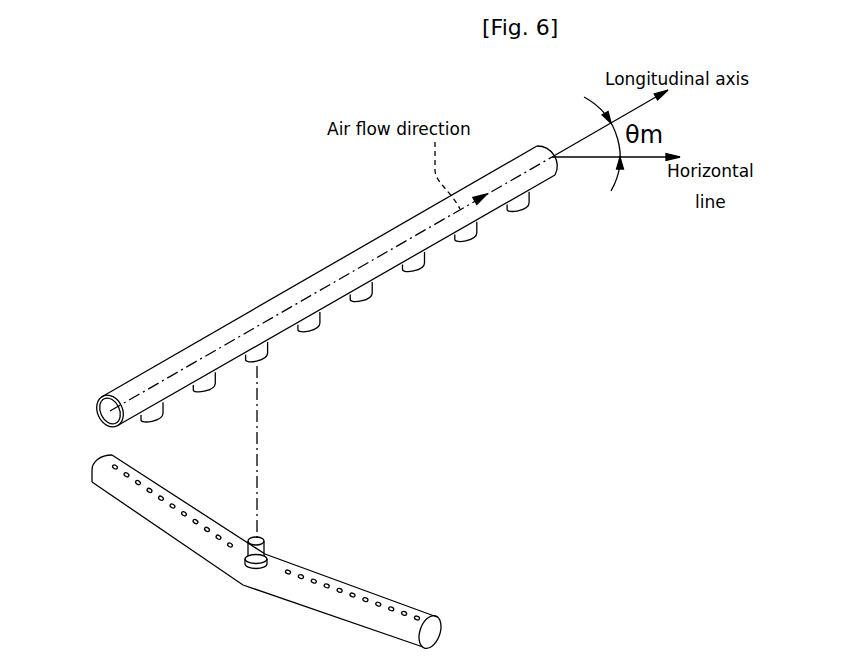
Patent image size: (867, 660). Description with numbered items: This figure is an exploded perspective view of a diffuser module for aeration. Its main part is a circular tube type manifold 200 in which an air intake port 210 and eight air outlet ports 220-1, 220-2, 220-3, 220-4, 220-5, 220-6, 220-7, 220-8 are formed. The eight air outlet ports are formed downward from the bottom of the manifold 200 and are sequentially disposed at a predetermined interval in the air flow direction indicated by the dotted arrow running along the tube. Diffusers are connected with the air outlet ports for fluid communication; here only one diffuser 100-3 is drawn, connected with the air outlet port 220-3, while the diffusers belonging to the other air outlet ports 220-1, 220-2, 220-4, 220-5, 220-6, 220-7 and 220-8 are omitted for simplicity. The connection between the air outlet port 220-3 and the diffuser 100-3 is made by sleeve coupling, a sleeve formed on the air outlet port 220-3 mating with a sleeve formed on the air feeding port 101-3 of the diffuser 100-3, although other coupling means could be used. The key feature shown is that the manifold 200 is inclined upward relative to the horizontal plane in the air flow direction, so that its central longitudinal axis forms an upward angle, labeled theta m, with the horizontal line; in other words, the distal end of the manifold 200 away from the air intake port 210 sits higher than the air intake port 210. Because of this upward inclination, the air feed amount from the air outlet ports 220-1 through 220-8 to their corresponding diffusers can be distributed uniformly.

The manifold 200 is at (328, 277).
The air intake port 210 is at (97, 412).
The air outlet port 220-1 is at (163, 413).
The air outlet port 220-2 is at (215, 383).
The air outlet port 220-3 is at (268, 351).
The air outlet port 220-4 is at (320, 321).
The air outlet port 220-5 is at (372, 291).
The air outlet port 220-6 is at (424, 261).
The air outlet port 220-7 is at (477, 231).
The air outlet port 220-8 is at (529, 201).
The diffuser 100-3 is at (410, 610).
The air feeding port 101-3 is at (247, 560).